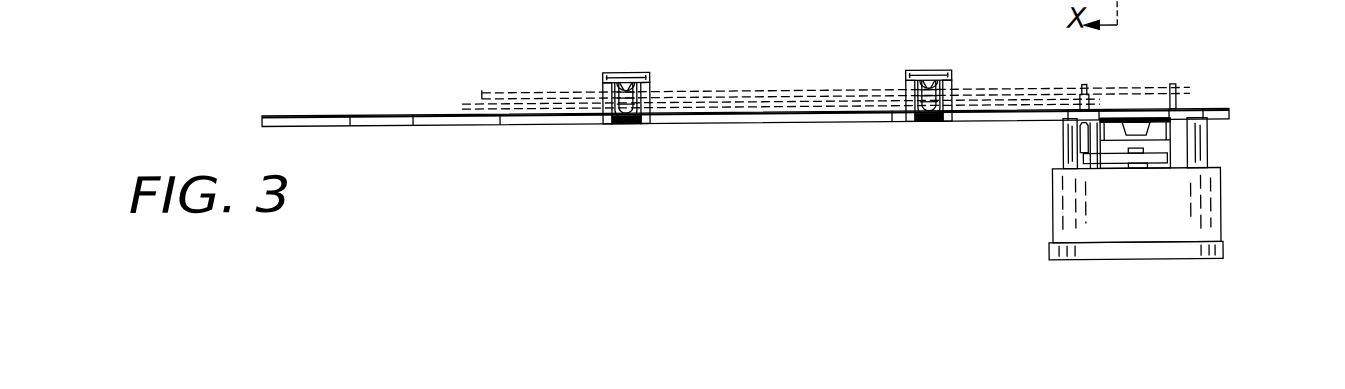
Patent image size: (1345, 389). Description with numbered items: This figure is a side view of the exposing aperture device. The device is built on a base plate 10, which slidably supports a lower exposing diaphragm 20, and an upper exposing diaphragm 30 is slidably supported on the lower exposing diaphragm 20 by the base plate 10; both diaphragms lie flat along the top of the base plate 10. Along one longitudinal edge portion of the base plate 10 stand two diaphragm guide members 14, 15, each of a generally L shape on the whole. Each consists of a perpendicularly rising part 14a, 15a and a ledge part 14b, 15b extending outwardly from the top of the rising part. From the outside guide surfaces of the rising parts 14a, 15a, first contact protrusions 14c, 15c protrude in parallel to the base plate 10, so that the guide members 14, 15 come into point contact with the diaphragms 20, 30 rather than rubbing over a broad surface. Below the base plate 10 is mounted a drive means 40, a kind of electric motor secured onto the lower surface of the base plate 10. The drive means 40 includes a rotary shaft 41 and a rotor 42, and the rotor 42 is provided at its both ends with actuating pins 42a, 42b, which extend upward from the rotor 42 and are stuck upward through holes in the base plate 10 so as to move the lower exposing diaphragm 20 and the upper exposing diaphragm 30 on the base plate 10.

The base plate 10 is at (500, 127).
The diaphragm guide member 14 is at (625, 111).
The rising part 14a is at (613, 128).
The ledge part 14b is at (634, 76).
The first contact protrusion 14c is at (623, 128).
The diaphragm guide member 15 is at (919, 110).
The rising part 15a is at (910, 128).
The ledge part 15b is at (924, 76).
The first contact protrusion 15c is at (918, 128).
The lower exposing diaphragm 20 is at (728, 97).
The upper exposing diaphragm 30 is at (781, 95).
The drive means 40 is at (1153, 145).
The rotary shaft 41 is at (1137, 176).
The rotor 42 is at (1150, 134).
The actuating pin 42a is at (1178, 107).
The actuating pin 42b is at (1085, 91).